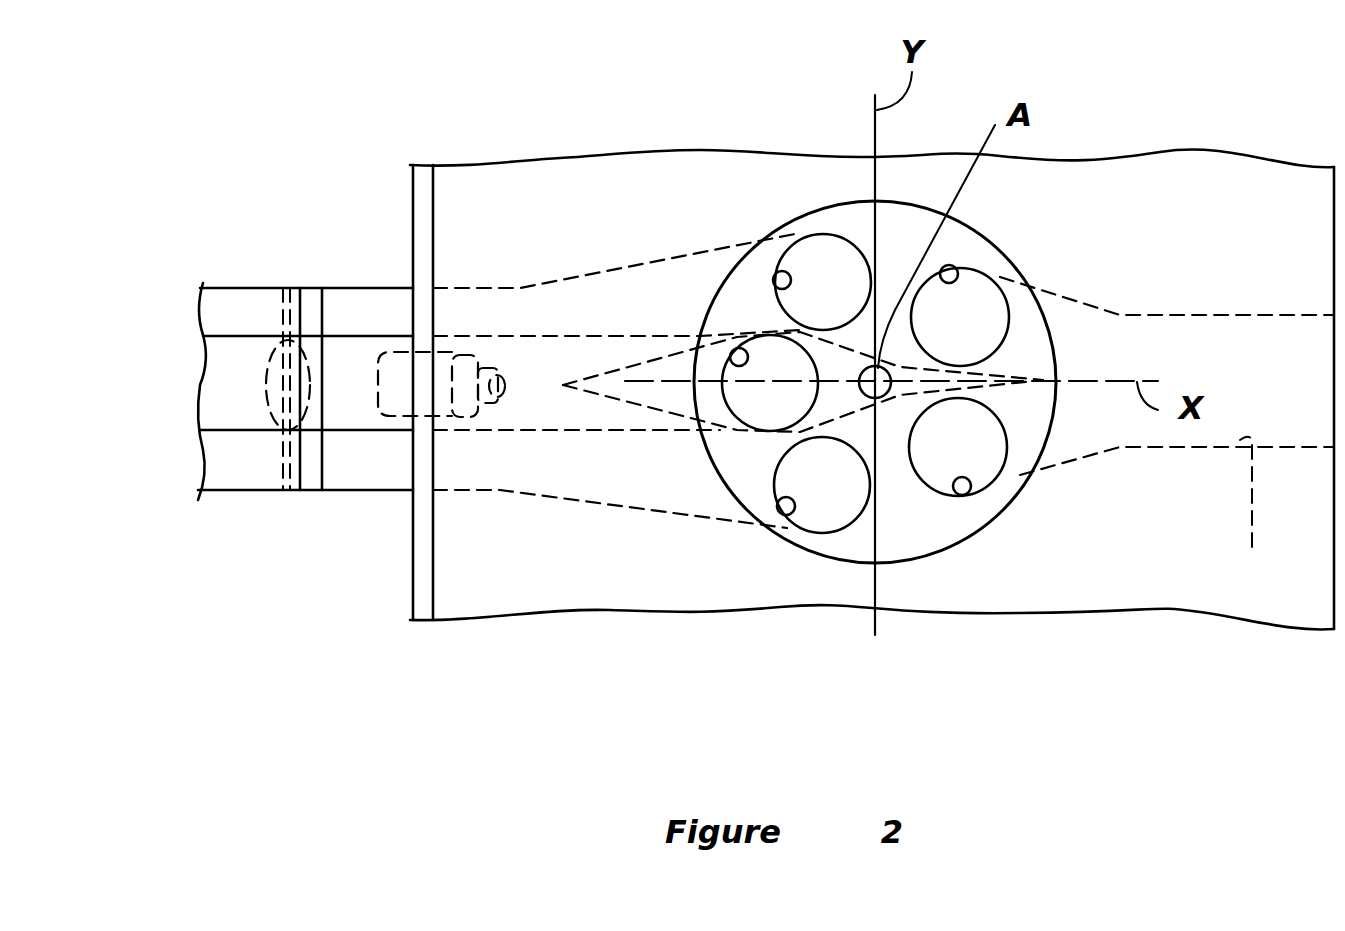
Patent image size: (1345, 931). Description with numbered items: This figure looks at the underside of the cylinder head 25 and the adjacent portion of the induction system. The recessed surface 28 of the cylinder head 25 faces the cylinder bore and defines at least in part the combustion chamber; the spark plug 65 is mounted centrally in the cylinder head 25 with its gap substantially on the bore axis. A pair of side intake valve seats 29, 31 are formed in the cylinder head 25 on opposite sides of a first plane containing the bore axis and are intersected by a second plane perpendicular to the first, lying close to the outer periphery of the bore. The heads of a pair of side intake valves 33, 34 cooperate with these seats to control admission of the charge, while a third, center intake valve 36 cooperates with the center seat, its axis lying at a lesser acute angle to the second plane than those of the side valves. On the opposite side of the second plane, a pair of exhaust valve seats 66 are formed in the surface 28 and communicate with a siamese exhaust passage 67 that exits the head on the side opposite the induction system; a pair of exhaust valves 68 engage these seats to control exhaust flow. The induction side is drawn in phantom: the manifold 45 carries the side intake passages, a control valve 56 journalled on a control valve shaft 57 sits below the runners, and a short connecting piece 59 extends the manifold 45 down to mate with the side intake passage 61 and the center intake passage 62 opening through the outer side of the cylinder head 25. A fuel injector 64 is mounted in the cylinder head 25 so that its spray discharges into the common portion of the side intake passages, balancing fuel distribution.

The cylinder head 25 is at (1208, 603).
The recessed surface 28 is at (933, 532).
The side intake valve seat 29 is at (782, 282).
The side intake valve seat 31 is at (788, 530).
The side intake valve 33 is at (833, 237).
The side intake valve 34 is at (838, 513).
The center intake valve 36 is at (768, 355).
The manifold 45 is at (240, 340).
The control valve 56 is at (275, 388).
The control valve shaft 57 is at (278, 462).
The connecting piece 59 is at (375, 483).
The side intake passage 61 is at (602, 488).
The center intake passage 62 is at (497, 427).
The fuel injector 64 is at (395, 368).
The spark plug 65 is at (880, 397).
The exhaust valve seat 66 is at (955, 272).
The siamese exhaust passage 67 is at (1256, 514).
The exhaust valve 68 is at (972, 282).